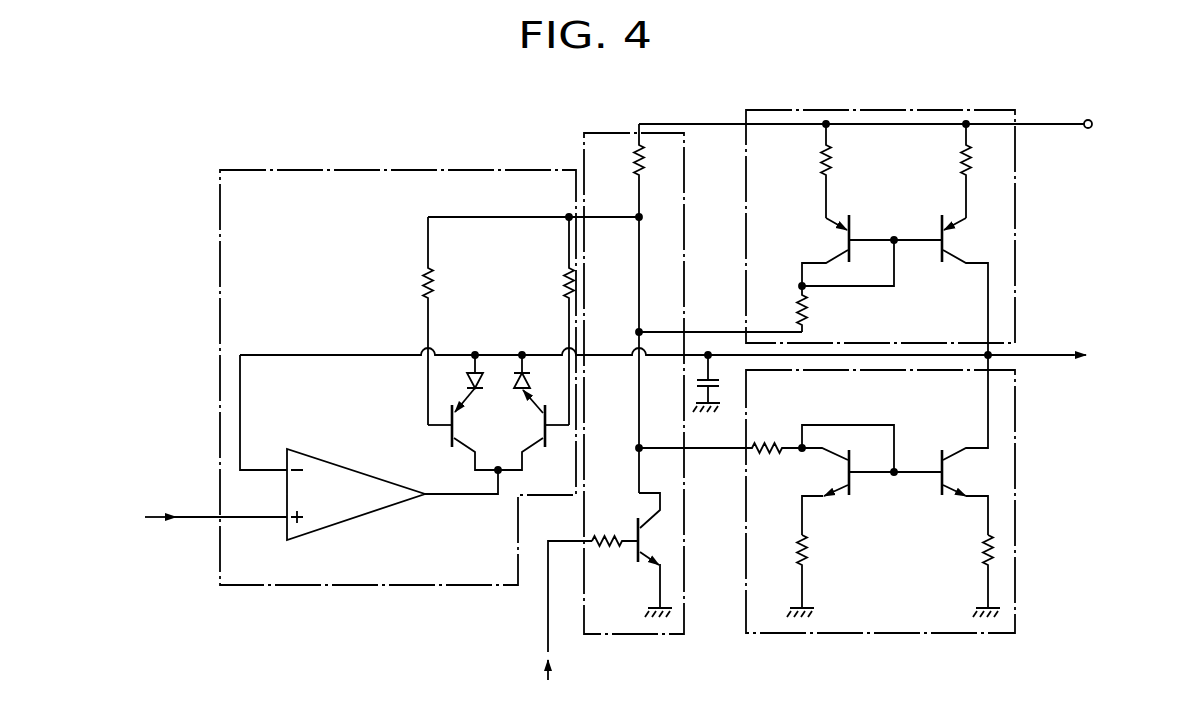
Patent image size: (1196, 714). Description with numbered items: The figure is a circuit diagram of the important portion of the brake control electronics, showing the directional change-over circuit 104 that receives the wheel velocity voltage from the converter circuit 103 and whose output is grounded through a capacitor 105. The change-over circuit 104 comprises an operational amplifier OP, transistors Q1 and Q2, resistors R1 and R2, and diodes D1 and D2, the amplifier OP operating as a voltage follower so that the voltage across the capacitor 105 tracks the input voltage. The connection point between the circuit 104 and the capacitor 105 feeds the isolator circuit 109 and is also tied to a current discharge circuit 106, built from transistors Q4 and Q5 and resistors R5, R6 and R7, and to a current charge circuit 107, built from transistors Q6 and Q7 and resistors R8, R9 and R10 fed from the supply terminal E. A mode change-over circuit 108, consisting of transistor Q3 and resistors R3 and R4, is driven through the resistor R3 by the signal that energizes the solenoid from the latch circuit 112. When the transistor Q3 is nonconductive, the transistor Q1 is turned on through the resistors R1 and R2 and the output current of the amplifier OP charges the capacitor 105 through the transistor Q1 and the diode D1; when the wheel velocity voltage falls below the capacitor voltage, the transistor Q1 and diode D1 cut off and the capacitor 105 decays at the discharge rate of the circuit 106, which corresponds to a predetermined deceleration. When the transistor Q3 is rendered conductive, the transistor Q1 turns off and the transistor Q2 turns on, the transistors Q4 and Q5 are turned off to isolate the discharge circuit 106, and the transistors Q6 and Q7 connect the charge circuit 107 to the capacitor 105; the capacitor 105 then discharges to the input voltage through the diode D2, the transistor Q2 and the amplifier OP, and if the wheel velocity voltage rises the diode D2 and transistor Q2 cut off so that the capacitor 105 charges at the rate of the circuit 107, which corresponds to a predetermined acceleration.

The directional change-over circuit 104 is at (361, 170).
The capacitor 105 is at (726, 384).
The current discharge circuit 106 is at (921, 633).
The current charge circuit 107 is at (845, 110).
The mode change-over circuit 108 is at (668, 634).
The converter circuit 103 is at (156, 514).
The isolator circuit 109 is at (707, 357).
The latch circuit 112 is at (533, 623).
The power supply terminal E is at (1088, 119).
The operational amplifier OP is at (352, 468).
The resistor R1 is at (564, 285).
The resistor R2 is at (420, 268).
The resistor R3 is at (604, 538).
The resistor R4 is at (668, 146).
The resistor R5 is at (767, 447).
The resistor R6 is at (807, 558).
The resistor R7 is at (985, 558).
The resistor R8 is at (818, 298).
The resistor R9 is at (849, 150).
The resistor R10 is at (959, 154).
The transistor Q1 is at (538, 431).
The transistor Q2 is at (463, 441).
The transistor Q3 is at (651, 543).
The transistor Q4 is at (842, 472).
The transistor Q5 is at (946, 472).
The transistor Q6 is at (840, 240).
The transistor Q7 is at (948, 240).
The diode D1 is at (528, 382).
The diode D2 is at (469, 381).